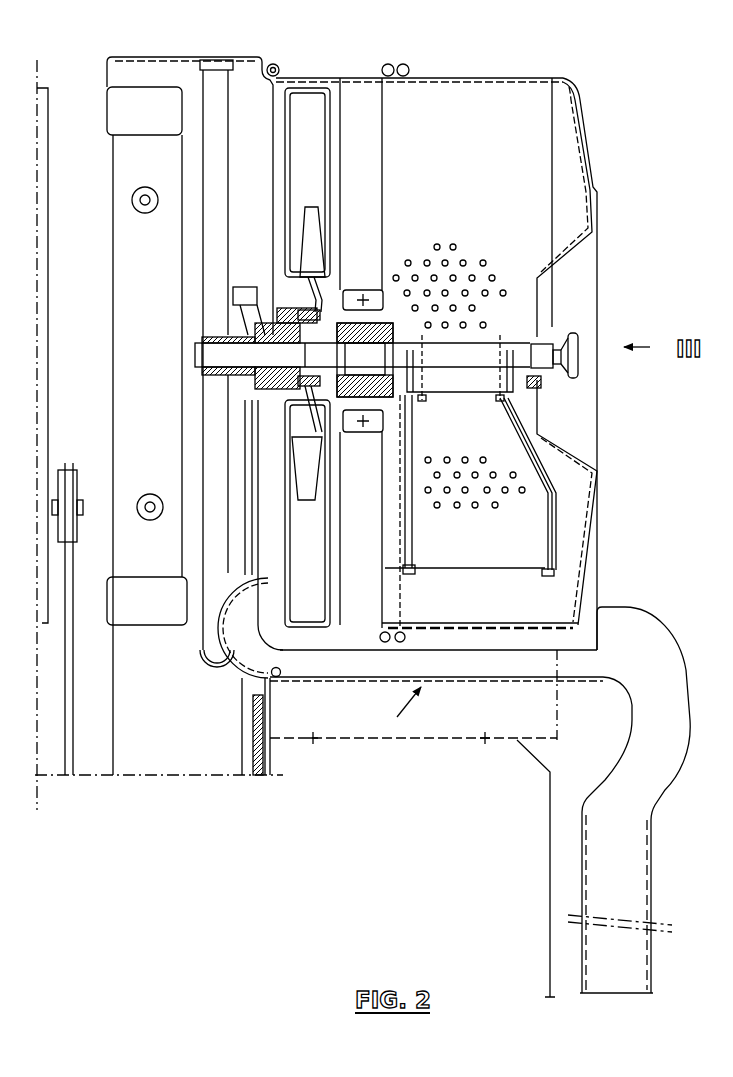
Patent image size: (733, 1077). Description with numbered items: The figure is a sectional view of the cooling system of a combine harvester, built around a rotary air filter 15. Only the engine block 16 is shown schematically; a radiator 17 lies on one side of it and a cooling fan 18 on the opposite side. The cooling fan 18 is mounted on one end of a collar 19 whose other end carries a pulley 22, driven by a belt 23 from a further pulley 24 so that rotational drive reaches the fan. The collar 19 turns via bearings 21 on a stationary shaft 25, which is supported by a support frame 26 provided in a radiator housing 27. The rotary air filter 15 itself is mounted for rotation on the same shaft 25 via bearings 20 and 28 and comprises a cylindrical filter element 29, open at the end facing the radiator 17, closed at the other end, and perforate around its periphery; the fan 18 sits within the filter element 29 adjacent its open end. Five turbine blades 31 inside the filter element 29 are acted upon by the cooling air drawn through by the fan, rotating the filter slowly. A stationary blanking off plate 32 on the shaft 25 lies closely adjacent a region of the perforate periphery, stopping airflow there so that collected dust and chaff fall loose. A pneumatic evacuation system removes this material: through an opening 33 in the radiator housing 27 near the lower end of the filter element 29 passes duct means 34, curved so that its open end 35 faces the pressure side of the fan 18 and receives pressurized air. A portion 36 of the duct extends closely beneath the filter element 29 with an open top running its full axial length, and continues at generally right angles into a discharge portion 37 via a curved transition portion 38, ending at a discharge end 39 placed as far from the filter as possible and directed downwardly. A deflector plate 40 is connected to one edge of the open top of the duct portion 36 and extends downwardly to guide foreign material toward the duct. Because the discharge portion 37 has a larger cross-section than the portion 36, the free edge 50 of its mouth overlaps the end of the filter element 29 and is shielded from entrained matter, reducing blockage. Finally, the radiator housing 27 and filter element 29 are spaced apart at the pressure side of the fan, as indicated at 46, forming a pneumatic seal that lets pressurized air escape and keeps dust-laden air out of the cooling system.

The rotary air filter 15 is at (538, 66).
The engine block 16 is at (53, 447).
The radiator 17 is at (113, 345).
The cooling fan 18 is at (300, 183).
The collar 19 is at (270, 335).
The bearing 20 is at (540, 340).
The bearings 21 is at (313, 345).
The pulley 22 is at (237, 330).
The belt 23 is at (248, 535).
The further pulley 24 is at (242, 703).
The stationary shaft 25 is at (196, 353).
The support frame 26 is at (218, 131).
The radiator housing 27 is at (165, 57).
The bearing 28 is at (392, 332).
The filter element 29 is at (472, 77).
The turbine blades 31 is at (373, 198).
The blanking off plate 32 is at (470, 625).
The opening 33 is at (280, 680).
The duct means 34 is at (398, 712).
The open end 35 is at (270, 597).
The duct portion 36 is at (475, 681).
The discharge portion 37 is at (652, 870).
The curved transition portion 38 is at (675, 655).
The discharge end 39 is at (650, 993).
The deflector plate 40 is at (462, 740).
The pneumatic seal space 46 is at (271, 64).
The free edge 50 is at (598, 612).